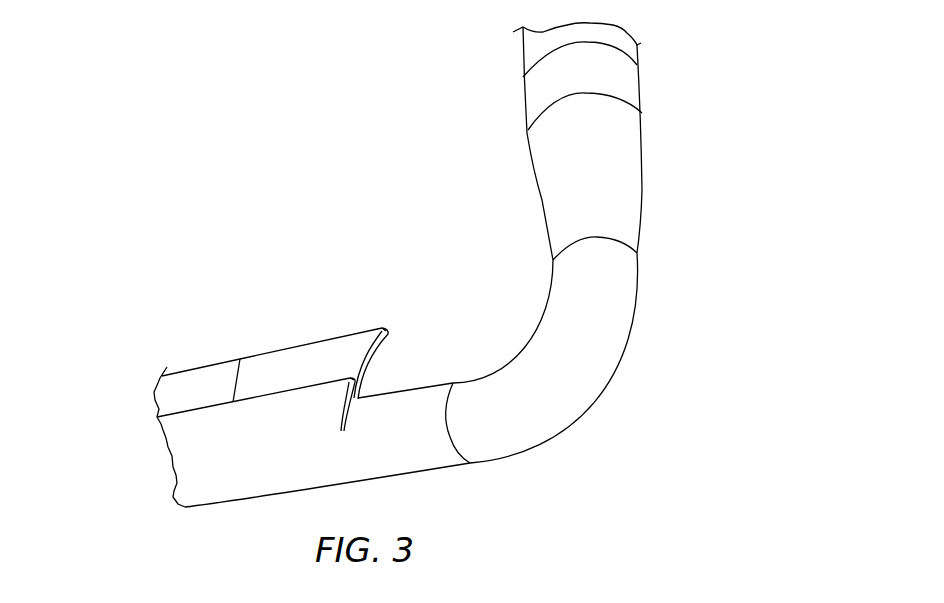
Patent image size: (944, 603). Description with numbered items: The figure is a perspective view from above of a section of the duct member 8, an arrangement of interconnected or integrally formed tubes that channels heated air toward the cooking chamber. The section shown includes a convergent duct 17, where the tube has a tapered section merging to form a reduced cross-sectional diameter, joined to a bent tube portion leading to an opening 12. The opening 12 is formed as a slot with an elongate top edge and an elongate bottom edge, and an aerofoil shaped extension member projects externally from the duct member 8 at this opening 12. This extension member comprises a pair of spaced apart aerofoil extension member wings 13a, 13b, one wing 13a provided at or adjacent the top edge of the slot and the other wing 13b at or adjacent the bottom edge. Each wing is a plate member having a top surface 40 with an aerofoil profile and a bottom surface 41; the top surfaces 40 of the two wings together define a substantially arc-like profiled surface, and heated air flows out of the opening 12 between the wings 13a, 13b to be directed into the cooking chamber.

The duct member 8 is at (453, 206).
The convergent ducts 17 is at (641, 157).
The opening 12 is at (341, 372).
The aerofoil extension member wing 13a is at (185, 422).
The aerofoil extension member wing 13b is at (177, 390).
The top surface 40 is at (347, 369).
The bottom surface 41 is at (372, 360).